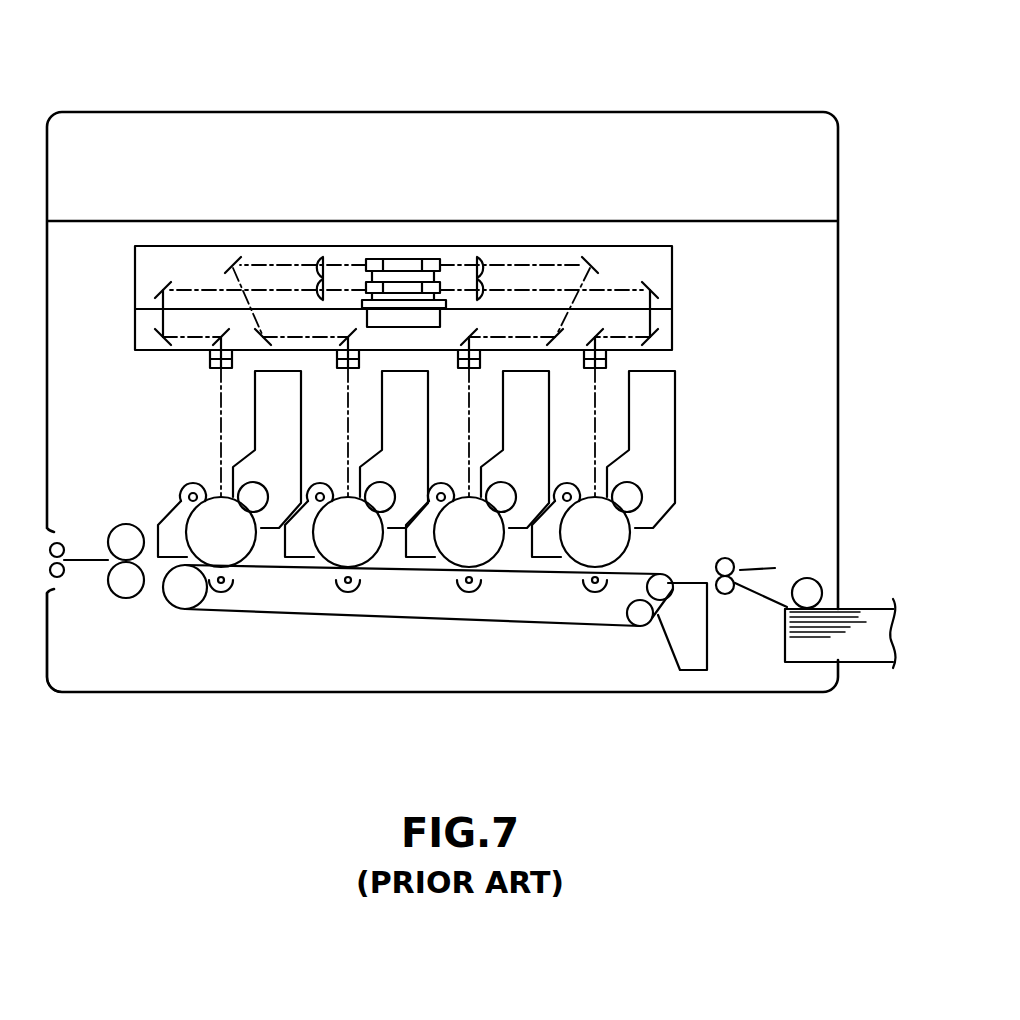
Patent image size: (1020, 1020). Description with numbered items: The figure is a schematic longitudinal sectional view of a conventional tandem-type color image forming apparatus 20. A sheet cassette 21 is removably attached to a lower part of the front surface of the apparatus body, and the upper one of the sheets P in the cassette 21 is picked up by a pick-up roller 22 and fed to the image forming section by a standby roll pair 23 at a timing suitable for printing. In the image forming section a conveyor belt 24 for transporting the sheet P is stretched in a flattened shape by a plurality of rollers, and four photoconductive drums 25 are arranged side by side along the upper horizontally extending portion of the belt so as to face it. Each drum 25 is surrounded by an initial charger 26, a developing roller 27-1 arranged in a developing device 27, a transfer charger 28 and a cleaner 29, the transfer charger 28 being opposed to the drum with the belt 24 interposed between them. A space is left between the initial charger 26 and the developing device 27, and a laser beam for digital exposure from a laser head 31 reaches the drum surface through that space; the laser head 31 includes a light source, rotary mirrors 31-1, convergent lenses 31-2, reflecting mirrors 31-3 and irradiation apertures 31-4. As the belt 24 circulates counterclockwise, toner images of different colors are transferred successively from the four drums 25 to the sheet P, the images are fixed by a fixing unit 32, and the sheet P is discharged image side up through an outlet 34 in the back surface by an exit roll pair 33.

The tandem type color image forming apparatus 20 is at (559, 112).
The sheet cassette 21 is at (862, 664).
The pick-up roller 22 is at (808, 578).
The standby roll pair 23 is at (727, 556).
The conveyor belt 24 is at (522, 620).
The photoconductive drum 25 is at (672, 540).
The initial charger 26 is at (570, 492).
The developing device 27 is at (664, 433).
The developing roller 27-1 is at (641, 500).
The transfer charger 28 is at (594, 592).
The cleaner 29 is at (552, 557).
The laser head 31 is at (672, 320).
The rotary mirrors 31-1 is at (403, 262).
The convergent lenses 31-2 is at (480, 257).
The reflecting mirrors 31-3 is at (646, 287).
The irradiation apertures 31-4 is at (606, 357).
The fixing unit 32 is at (130, 523).
The exit roll pair 33 is at (62, 540).
The outlet 34 is at (45, 580).
The sheet P is at (870, 606).